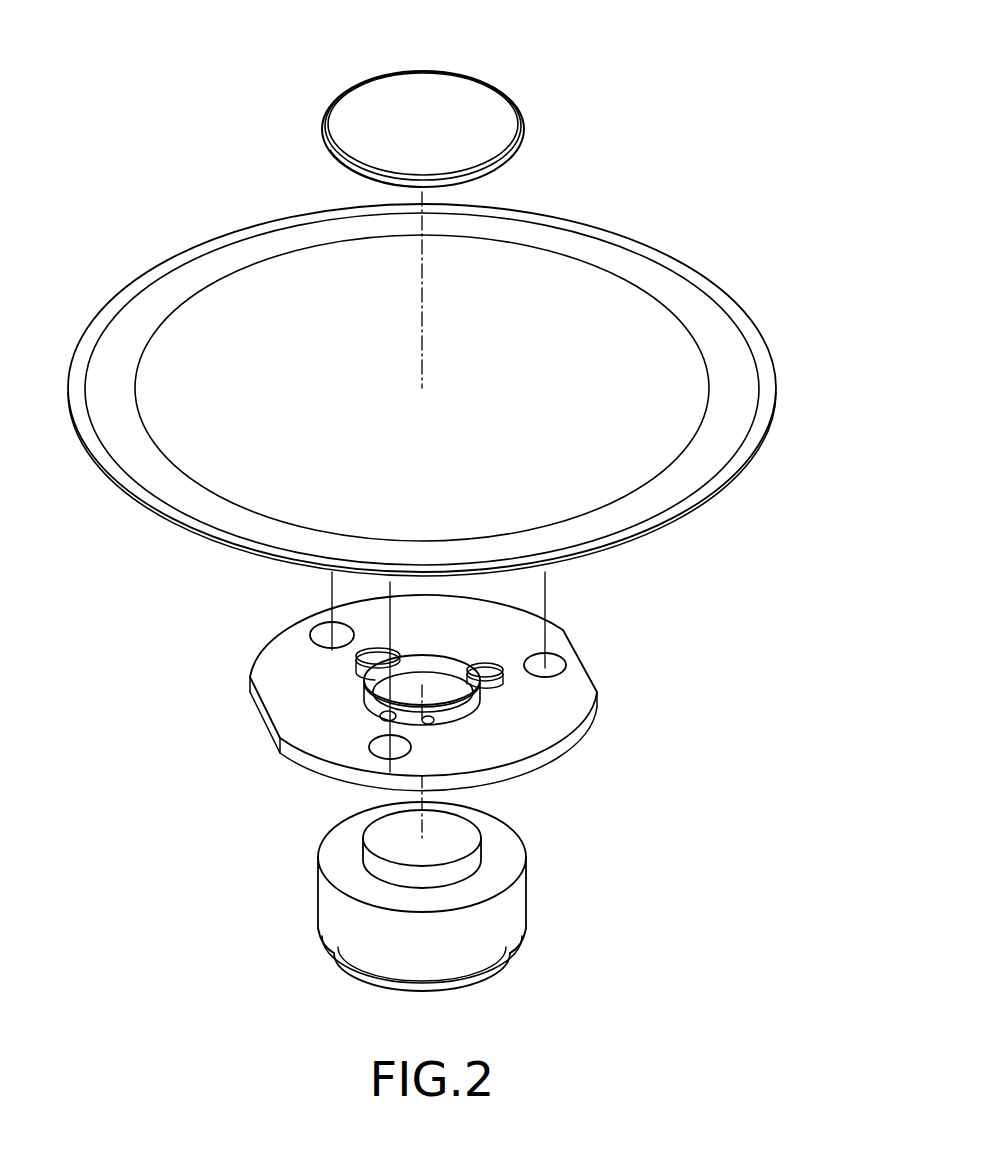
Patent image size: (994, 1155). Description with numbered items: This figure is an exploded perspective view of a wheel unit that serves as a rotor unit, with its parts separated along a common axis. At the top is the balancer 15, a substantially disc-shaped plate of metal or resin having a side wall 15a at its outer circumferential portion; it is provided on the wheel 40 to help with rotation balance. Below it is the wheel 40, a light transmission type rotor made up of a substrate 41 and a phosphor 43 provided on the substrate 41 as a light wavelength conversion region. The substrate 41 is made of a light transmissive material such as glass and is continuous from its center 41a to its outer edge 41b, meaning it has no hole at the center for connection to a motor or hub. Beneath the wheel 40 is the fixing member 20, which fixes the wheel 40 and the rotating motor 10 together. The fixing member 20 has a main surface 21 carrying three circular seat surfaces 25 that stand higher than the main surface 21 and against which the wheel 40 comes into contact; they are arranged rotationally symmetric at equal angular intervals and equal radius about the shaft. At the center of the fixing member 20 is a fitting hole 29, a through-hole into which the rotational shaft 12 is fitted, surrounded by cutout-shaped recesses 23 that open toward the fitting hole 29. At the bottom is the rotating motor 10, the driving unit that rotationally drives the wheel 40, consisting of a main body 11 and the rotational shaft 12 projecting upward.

The rotating motor 10 is at (411, 883).
The main body 11 is at (510, 905).
The rotational shaft 12 is at (462, 829).
The balancer 15 is at (423, 108).
The side wall 15a is at (493, 83).
The fixing member 20 is at (416, 684).
The main surface 21 is at (300, 693).
The recesses 23 is at (356, 654).
The seat surfaces 25 is at (322, 629).
The fitting hole 29 is at (447, 655).
The wheel 40 is at (474, 366).
The substrate 41 is at (233, 313).
The center 41a is at (427, 384).
The outer edge 41b is at (768, 330).
The phosphor 43 is at (283, 238).